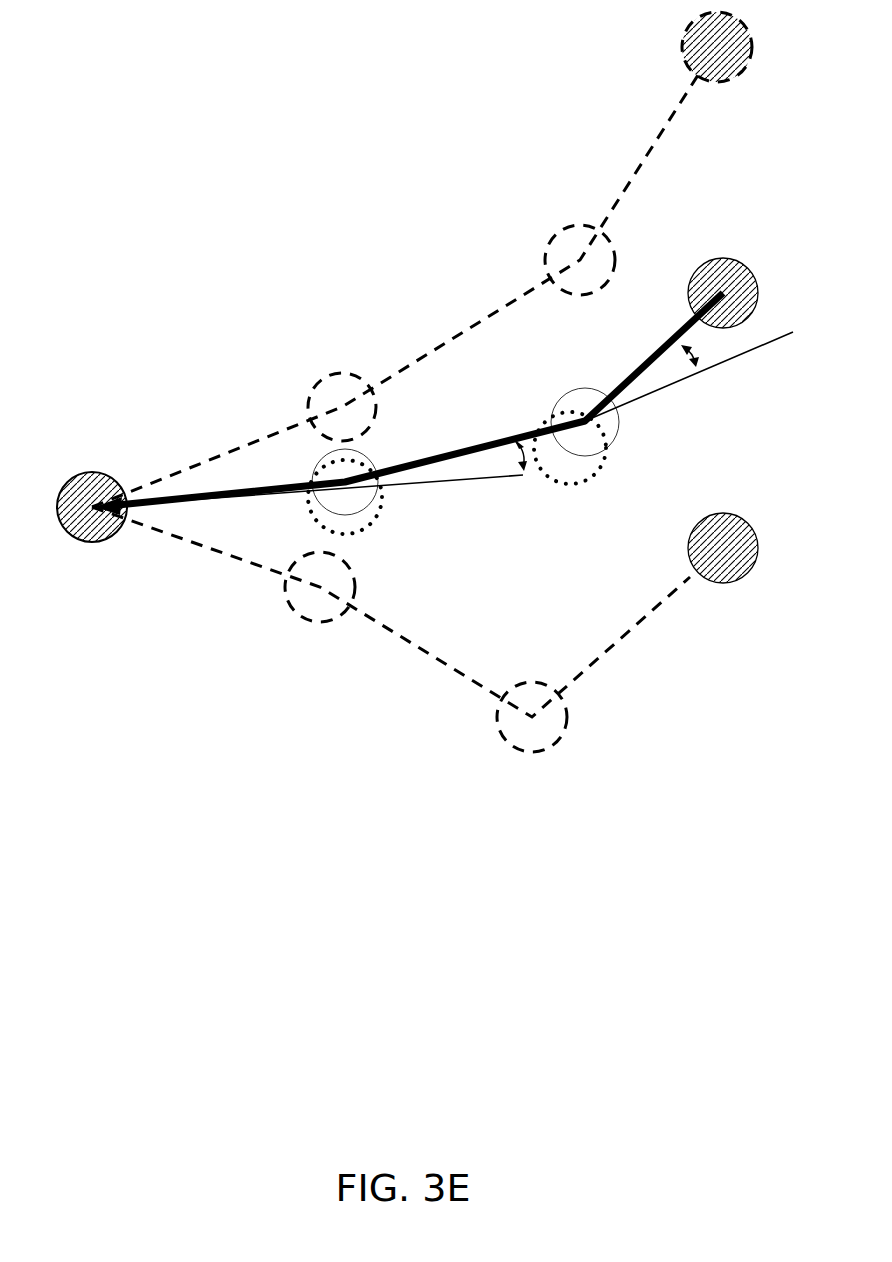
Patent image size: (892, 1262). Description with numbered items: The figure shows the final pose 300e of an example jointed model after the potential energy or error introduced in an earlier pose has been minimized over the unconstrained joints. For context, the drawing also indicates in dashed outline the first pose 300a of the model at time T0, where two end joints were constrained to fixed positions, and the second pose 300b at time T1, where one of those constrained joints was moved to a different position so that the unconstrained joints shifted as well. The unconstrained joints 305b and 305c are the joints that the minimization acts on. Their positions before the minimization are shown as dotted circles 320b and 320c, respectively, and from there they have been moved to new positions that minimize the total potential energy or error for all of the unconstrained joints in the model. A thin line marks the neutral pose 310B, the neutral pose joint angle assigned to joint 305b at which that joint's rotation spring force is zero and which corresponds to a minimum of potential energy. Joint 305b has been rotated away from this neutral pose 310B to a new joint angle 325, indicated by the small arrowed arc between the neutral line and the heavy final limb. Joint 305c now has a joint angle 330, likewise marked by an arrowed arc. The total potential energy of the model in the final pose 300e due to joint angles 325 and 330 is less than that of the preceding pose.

The first pose 300a is at (570, 214).
The second pose 300b is at (497, 745).
The final pose 300e is at (236, 488).
The joint 305b is at (369, 459).
The joint 305c is at (578, 388).
The neutral pose joint attribute 310B is at (518, 483).
The dotted circle 320b is at (369, 524).
The dotted circle 320c is at (583, 482).
The joint angle 325 is at (514, 440).
The joint angle 330 is at (689, 354).